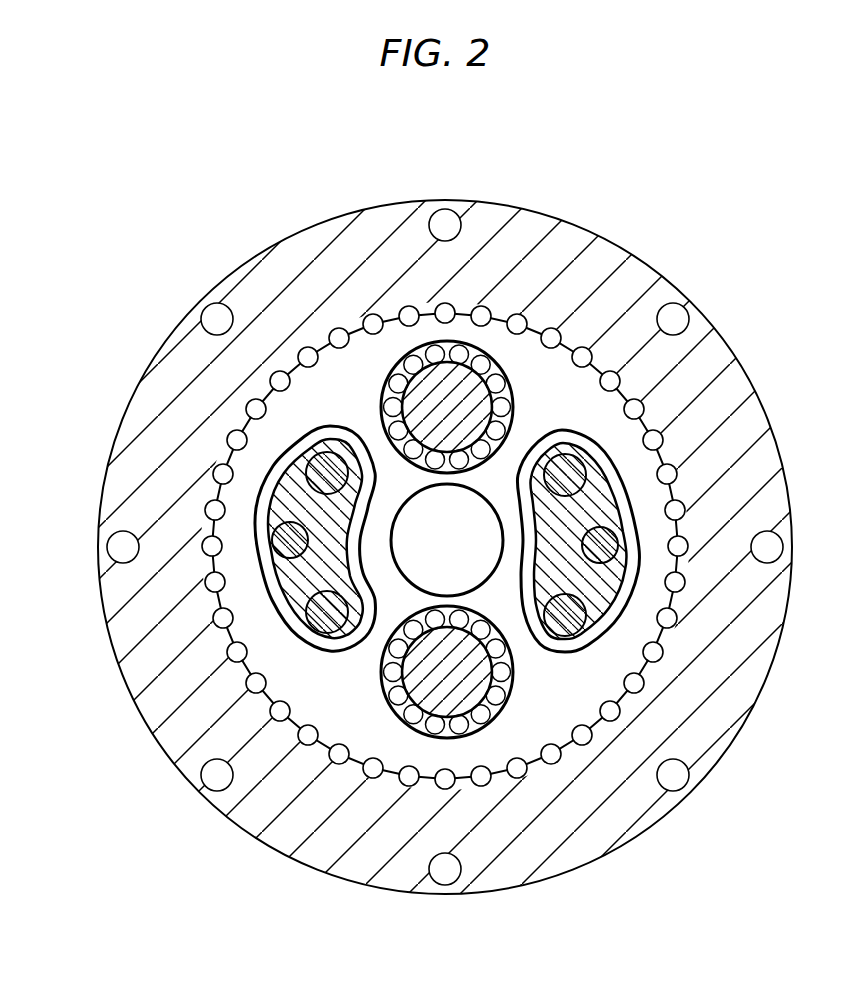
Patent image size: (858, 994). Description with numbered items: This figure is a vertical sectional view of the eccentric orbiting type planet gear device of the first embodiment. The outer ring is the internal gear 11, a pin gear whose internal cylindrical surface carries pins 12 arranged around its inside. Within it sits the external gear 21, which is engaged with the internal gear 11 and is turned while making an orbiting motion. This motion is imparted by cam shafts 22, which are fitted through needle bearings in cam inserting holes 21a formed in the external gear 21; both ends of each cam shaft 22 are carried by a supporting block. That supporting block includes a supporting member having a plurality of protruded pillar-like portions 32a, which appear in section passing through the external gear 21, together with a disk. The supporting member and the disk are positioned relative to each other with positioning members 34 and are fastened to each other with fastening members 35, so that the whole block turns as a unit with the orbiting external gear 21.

The internal gear 11 is at (637, 277).
The pins 12 is at (657, 655).
The external gear 21 is at (583, 407).
The cam inserting holes 21a is at (483, 357).
The cam shafts 22 is at (417, 410).
The protruded pillar-like portions 32a is at (283, 572).
The positioning members 34 is at (667, 620).
The fastening members 35 is at (605, 443).